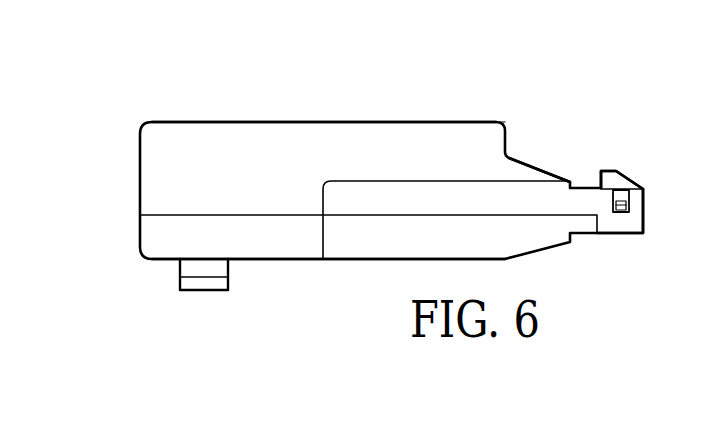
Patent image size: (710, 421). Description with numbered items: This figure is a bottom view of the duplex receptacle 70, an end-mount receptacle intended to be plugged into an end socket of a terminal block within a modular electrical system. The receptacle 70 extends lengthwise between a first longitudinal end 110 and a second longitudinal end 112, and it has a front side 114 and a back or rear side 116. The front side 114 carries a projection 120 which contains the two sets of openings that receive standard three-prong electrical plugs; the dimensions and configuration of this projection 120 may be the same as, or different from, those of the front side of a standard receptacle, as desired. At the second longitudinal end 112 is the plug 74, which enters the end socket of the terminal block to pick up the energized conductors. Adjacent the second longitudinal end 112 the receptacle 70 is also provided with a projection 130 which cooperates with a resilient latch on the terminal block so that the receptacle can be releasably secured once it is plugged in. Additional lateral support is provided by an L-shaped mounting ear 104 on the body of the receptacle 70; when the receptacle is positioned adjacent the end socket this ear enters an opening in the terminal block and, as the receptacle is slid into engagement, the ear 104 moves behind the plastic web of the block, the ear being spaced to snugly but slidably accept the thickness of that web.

The duplex receptacle 70 is at (516, 72).
The plug 74 is at (645, 213).
The lower L-shaped mounting ear 104 is at (197, 292).
The first longitudinal end 110 is at (128, 153).
The second longitudinal end 112 is at (653, 193).
The front side 114 is at (385, 107).
The back or rear side 116 is at (336, 284).
The projection 120 is at (506, 142).
The projection 130 is at (608, 171).